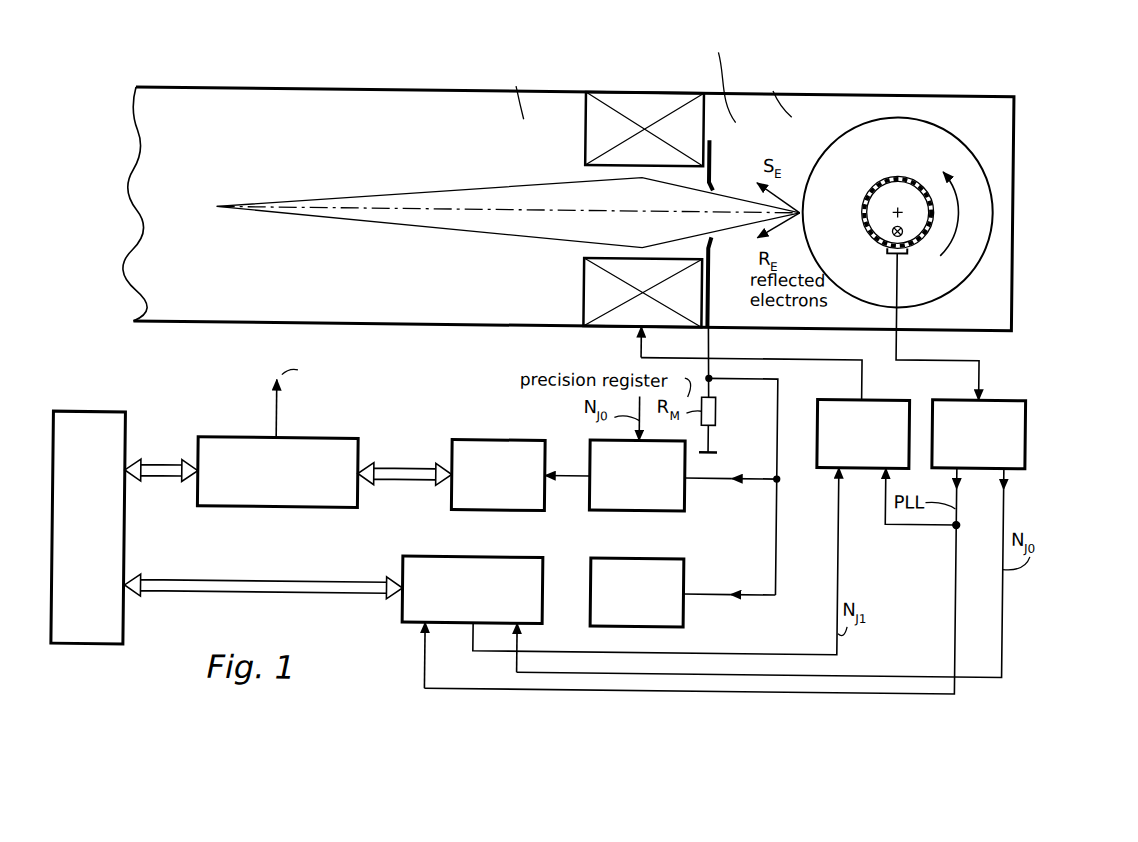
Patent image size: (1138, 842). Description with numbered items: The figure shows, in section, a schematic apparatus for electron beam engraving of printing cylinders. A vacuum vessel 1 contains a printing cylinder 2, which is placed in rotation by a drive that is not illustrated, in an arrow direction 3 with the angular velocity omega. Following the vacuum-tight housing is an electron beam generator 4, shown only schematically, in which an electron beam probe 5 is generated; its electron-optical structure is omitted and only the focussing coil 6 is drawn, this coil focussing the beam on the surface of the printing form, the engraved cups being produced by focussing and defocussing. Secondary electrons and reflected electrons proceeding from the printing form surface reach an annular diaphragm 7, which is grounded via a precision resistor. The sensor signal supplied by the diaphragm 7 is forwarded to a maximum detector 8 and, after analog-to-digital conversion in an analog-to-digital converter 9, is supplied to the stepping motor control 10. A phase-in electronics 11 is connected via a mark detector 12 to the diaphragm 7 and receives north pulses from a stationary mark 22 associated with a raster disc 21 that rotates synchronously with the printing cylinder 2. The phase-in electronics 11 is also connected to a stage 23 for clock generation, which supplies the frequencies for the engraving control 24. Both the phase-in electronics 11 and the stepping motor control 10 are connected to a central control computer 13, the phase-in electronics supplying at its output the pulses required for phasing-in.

The vacuum vessel 1 is at (1015, 240).
The printing cylinder 2 is at (834, 135).
The arrow direction 3 is at (960, 181).
The electron beam generator 4 is at (405, 320).
The electron beam probe 5 is at (449, 220).
The focussing coil 6 is at (586, 122).
The annular diaphragm 7 is at (714, 153).
The maximum detector 8 is at (682, 496).
The analog-to-digital converter 9 is at (479, 441).
The stepping motor control 10 is at (216, 446).
The phase-in electronics 11 is at (452, 563).
The mark detector 12 is at (618, 558).
The central control computer 13 is at (108, 417).
The raster disc 21 is at (893, 172).
The stationary mark 22 is at (895, 222).
The stage for clock generation 23 is at (1011, 390).
The engraving control 24 is at (822, 408).